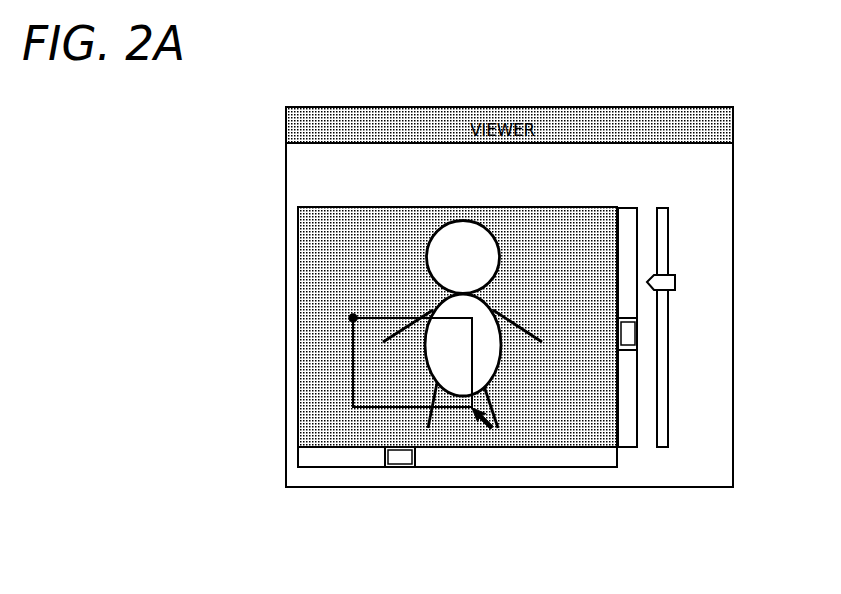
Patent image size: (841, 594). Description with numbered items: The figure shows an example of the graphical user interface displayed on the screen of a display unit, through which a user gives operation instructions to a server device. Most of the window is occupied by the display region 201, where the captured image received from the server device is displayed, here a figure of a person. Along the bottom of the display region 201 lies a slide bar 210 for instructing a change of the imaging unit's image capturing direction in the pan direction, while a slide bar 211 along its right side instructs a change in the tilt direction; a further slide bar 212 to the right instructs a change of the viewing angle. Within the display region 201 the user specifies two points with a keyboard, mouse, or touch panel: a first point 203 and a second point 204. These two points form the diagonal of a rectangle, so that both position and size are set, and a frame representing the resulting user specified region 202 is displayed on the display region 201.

The display region 201 is at (558, 207).
The user specified region 202 is at (352, 388).
The first point 203 is at (349, 318).
The second point 204 is at (471, 414).
The slide bar 210 is at (335, 468).
The slide bar 211 is at (627, 207).
The slide bar 212 is at (695, 232).